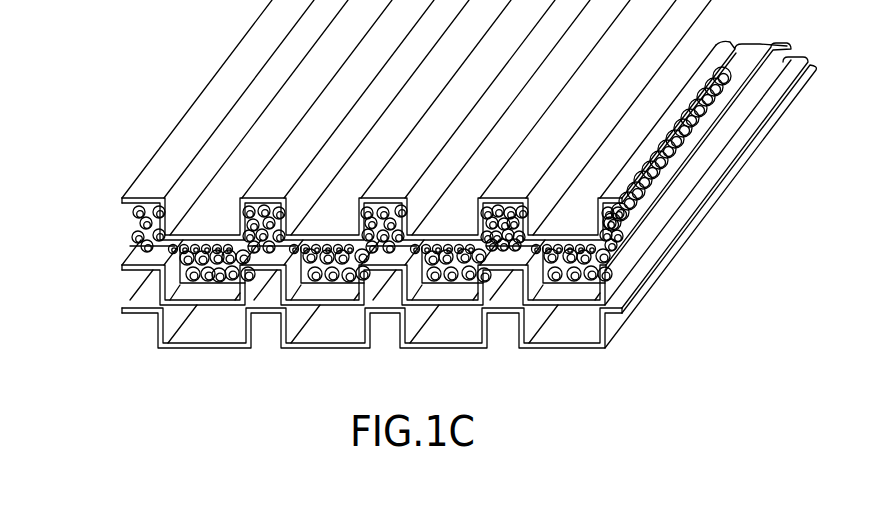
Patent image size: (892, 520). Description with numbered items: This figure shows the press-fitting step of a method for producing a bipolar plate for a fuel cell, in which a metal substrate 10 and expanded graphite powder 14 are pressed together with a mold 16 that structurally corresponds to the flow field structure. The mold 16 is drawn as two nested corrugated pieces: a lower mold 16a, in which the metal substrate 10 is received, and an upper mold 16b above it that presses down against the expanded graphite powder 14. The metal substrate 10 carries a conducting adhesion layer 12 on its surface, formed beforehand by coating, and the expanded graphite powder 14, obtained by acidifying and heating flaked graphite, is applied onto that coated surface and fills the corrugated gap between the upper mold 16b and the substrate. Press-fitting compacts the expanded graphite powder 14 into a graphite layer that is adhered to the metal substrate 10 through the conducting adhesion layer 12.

The metal substrate 10 is at (620, 254).
The conducting adhesion layer 12 is at (637, 232).
The expanded graphite powder 14 is at (660, 194).
The mold 16 is at (51, 153).
The lower mold 16a is at (147, 294).
The upper mold 16b is at (143, 189).